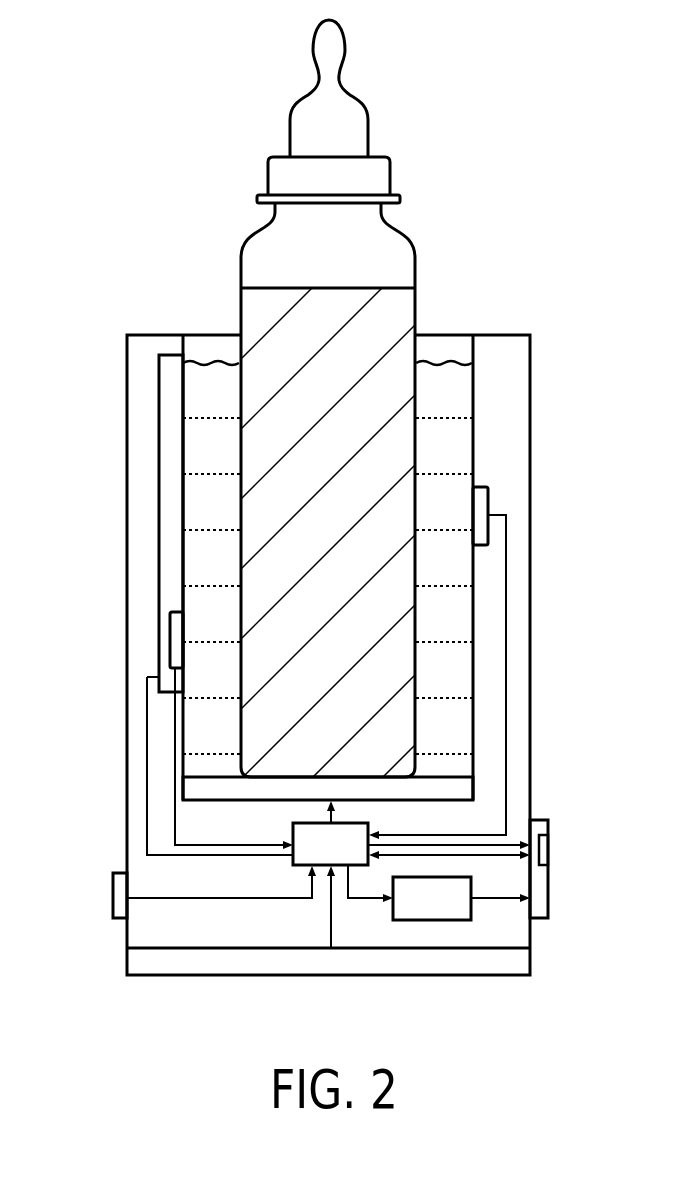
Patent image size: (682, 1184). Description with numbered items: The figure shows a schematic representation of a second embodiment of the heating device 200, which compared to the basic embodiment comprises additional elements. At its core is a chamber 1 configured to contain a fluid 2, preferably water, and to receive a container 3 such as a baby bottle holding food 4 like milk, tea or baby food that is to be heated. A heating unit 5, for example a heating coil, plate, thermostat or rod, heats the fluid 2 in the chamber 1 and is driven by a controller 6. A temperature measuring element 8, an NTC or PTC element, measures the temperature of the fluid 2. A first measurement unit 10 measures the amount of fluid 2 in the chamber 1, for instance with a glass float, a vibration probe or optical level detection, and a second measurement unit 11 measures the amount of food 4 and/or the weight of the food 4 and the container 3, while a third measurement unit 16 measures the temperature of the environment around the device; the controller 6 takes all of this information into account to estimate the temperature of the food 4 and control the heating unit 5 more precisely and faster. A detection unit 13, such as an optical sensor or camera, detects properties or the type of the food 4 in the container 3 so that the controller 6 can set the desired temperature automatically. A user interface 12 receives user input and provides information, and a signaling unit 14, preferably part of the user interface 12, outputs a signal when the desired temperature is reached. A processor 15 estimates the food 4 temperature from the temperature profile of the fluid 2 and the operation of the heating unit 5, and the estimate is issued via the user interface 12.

The heating device 200 is at (98, 204).
The chamber 1 is at (532, 468).
The fluid 2 is at (450, 395).
The container 3 is at (418, 260).
The food 4 is at (398, 322).
The heating unit 5 is at (467, 787).
The controller 6 is at (307, 860).
The temperature measuring element 8 is at (172, 613).
The first measurement unit 10 is at (158, 643).
The second measurement unit 11 is at (518, 962).
The user interface 12 is at (537, 818).
The detection unit 13 is at (483, 492).
The signaling unit 14 is at (547, 845).
The processor 15 is at (443, 922).
The third measurement unit 16 is at (115, 892).